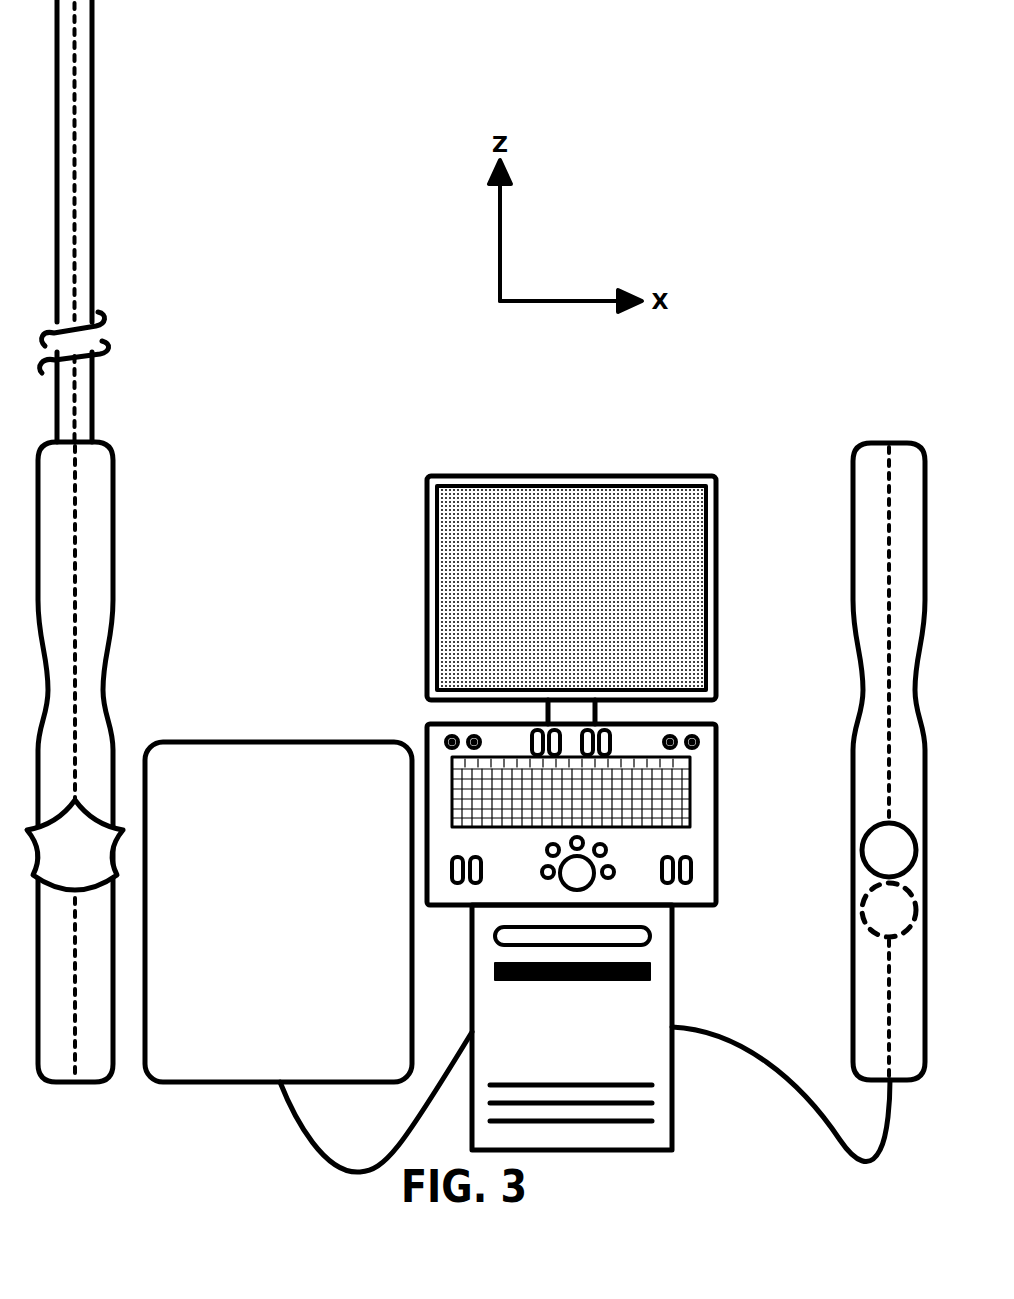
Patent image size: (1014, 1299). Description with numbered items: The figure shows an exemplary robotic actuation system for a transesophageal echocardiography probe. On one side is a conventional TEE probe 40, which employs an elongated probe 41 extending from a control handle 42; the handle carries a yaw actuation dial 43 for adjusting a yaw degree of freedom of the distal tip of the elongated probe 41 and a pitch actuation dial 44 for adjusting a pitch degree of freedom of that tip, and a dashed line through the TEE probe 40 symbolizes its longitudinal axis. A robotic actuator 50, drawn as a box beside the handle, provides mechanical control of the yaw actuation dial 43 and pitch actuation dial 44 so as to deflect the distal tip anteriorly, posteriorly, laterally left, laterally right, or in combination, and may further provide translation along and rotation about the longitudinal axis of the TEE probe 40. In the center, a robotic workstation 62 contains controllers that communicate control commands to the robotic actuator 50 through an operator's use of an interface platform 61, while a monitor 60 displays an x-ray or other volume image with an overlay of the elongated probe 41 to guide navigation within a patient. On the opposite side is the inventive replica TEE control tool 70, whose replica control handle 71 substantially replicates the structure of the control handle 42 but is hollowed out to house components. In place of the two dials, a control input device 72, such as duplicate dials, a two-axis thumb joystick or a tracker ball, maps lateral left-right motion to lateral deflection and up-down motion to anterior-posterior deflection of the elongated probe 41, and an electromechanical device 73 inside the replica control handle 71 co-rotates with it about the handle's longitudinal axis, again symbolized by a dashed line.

The TEE probe 40 is at (99, 753).
The elongated probe 41 is at (93, 187).
The control handle 42 is at (113, 568).
The yaw actuation dial 43 is at (64, 866).
The pitch actuation dial 44 is at (35, 828).
The robotic actuator 50 is at (266, 896).
The monitor 60 is at (716, 655).
The interface platform 61 is at (716, 868).
The robotic workstation 62 is at (674, 1007).
The replica TEE control tool 70 is at (851, 761).
The replica control handle 71 is at (853, 585).
The control input device 72 is at (878, 860).
The electromechanical device 73 is at (878, 920).